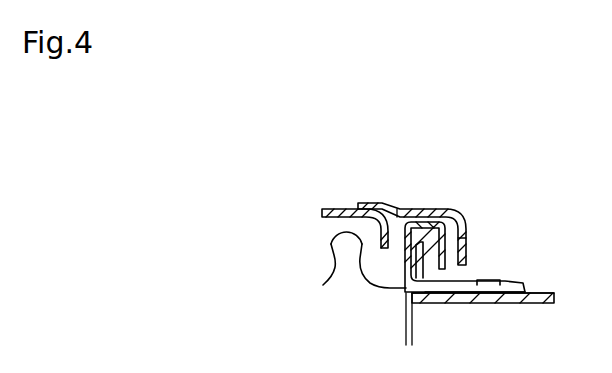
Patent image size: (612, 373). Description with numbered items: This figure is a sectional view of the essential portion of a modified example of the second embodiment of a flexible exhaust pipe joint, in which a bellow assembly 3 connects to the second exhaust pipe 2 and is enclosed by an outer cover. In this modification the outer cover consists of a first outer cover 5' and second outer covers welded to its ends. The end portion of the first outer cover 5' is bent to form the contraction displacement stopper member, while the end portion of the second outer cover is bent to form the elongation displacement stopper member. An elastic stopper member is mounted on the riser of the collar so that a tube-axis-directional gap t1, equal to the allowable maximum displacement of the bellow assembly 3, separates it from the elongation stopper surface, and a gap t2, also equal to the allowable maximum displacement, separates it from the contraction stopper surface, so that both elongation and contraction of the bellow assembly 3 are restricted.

The second exhaust pipe 2 is at (535, 292).
The bellow assembly 3 is at (320, 299).
The first outer cover 5' is at (354, 203).
The tube-axis-directional gap t1 is at (450, 238).
The gap t2 is at (398, 216).